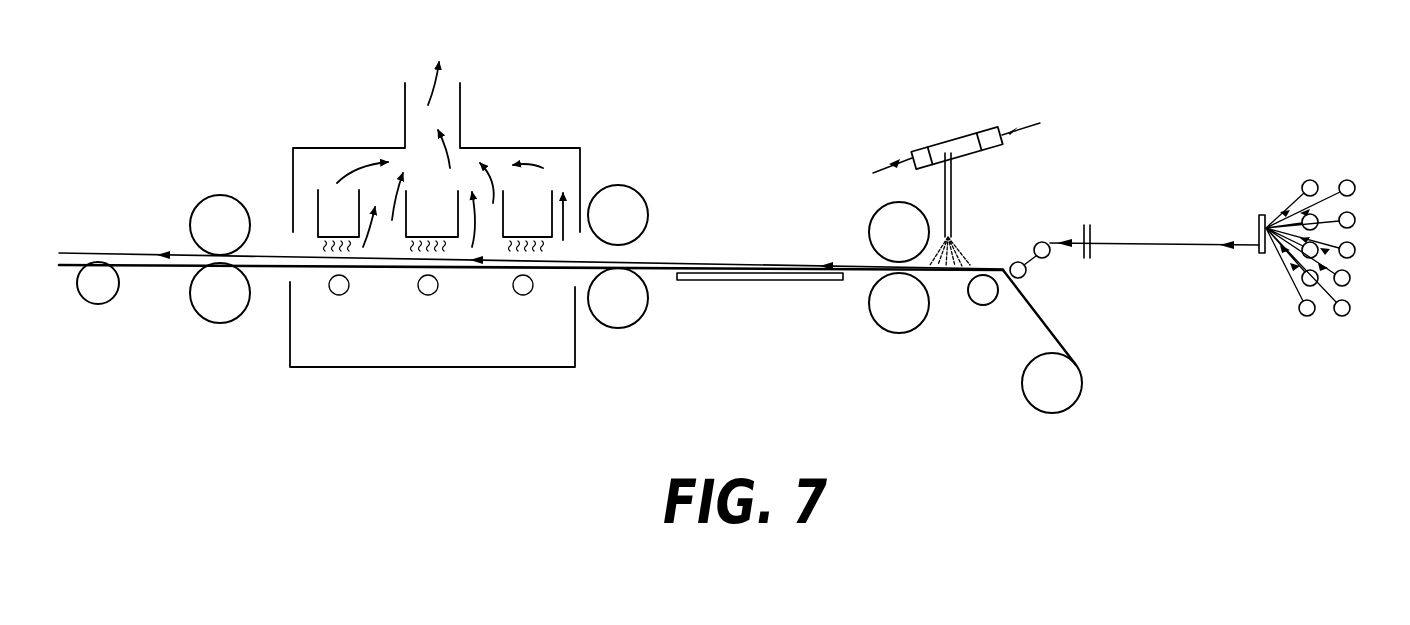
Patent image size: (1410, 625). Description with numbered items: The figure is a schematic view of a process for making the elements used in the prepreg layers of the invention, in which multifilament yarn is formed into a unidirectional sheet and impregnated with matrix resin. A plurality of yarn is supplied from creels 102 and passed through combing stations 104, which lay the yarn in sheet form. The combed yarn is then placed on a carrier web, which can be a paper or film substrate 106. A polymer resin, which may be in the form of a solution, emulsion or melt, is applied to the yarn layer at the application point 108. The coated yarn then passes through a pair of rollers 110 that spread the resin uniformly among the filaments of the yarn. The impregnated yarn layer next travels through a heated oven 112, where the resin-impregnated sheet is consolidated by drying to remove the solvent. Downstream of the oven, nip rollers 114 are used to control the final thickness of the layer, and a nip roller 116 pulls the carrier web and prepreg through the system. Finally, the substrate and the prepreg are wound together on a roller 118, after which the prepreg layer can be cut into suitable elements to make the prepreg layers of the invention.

The creels 102 is at (1347, 162).
The combing stations 104 is at (1255, 208).
The paper or film substrate 106 is at (1020, 310).
The polymer resin application point 108 is at (953, 128).
The pair of rollers 110 is at (857, 218).
The heated oven 112 is at (472, 113).
The nip rollers 114 is at (633, 318).
The nip roller 116 is at (232, 322).
The roller 118 is at (98, 304).